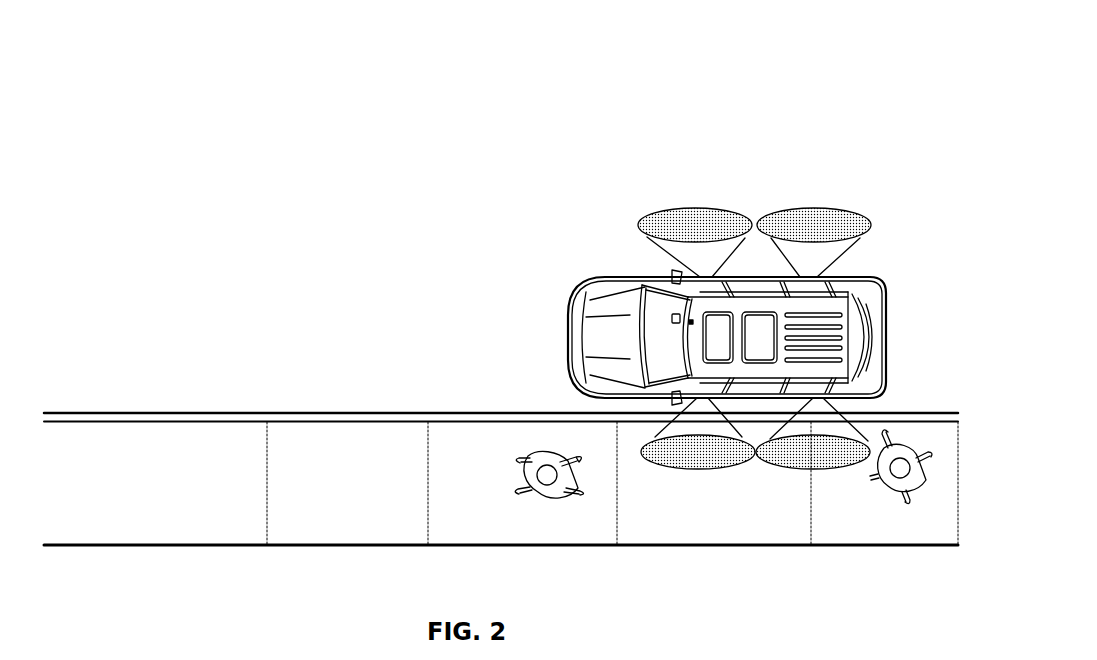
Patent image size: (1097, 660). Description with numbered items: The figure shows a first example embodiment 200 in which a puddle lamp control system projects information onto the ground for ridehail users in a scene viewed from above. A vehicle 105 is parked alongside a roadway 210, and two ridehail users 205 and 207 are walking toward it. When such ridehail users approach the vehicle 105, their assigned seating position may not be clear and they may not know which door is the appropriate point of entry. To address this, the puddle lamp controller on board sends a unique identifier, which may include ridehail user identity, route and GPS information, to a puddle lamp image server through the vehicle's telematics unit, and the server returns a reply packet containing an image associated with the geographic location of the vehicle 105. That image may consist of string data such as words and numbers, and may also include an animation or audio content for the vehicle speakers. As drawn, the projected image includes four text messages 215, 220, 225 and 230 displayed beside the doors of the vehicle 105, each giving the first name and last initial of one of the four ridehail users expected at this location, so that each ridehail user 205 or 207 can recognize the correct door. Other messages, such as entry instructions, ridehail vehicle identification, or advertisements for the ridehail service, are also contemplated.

The first example embodiment 200 is at (863, 76).
The vehicle 105 is at (601, 279).
The ridehail user 205 is at (538, 496).
The ridehail user 207 is at (897, 500).
The roadway 210 is at (483, 428).
The text message 215 is at (698, 469).
The text message 220 is at (787, 469).
The text message 225 is at (648, 213).
The text message 230 is at (812, 210).